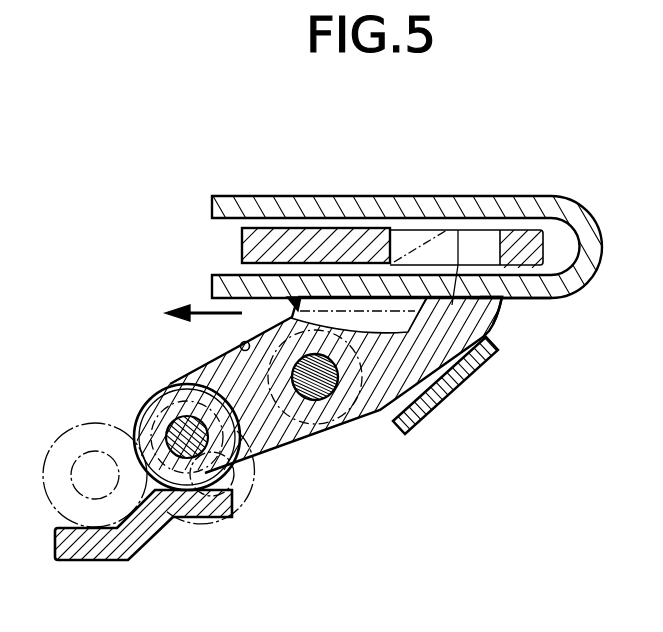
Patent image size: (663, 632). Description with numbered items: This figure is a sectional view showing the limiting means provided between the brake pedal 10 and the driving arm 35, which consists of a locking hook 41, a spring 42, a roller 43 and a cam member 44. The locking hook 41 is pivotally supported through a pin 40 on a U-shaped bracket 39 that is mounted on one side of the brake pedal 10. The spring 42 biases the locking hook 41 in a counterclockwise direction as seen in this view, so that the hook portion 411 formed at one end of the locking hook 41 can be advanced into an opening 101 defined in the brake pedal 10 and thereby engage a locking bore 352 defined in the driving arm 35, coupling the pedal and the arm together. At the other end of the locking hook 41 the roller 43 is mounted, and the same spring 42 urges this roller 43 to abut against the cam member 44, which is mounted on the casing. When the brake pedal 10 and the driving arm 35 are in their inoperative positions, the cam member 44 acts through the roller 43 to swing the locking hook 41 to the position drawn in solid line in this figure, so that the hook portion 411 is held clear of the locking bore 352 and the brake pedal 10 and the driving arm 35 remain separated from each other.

The brake pedal 10 is at (534, 197).
The opening 101 is at (502, 299).
The driving arm 35 is at (240, 243).
The locking bore 352 is at (404, 228).
The U-shaped bracket 39 is at (446, 393).
The pin 40 is at (344, 426).
The locking hook 41 is at (310, 450).
The hook portion 411 is at (497, 296).
The spring 42 is at (241, 347).
The roller 43 is at (152, 398).
The cam member 44 is at (110, 562).